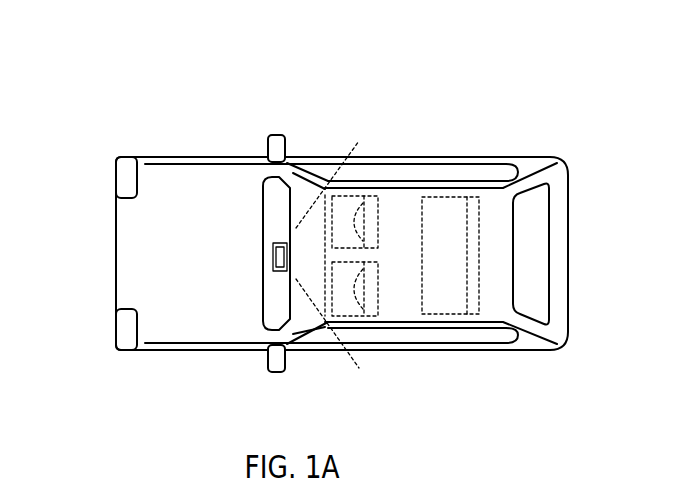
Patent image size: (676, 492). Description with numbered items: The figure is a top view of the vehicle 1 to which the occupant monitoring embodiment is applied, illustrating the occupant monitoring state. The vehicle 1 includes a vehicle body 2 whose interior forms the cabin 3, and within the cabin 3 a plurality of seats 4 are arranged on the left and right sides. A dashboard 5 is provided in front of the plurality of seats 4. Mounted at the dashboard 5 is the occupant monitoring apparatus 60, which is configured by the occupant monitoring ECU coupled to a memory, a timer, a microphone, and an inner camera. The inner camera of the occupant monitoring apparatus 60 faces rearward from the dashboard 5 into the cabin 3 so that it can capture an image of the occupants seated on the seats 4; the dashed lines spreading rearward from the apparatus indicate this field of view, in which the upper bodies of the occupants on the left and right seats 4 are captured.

The vehicle 1 is at (156, 130).
The vehicle body 2 is at (209, 154).
The cabin 3 is at (415, 315).
The seats 4 is at (378, 197).
The dashboard 5 is at (279, 308).
The occupant monitoring apparatus 60 is at (273, 258).